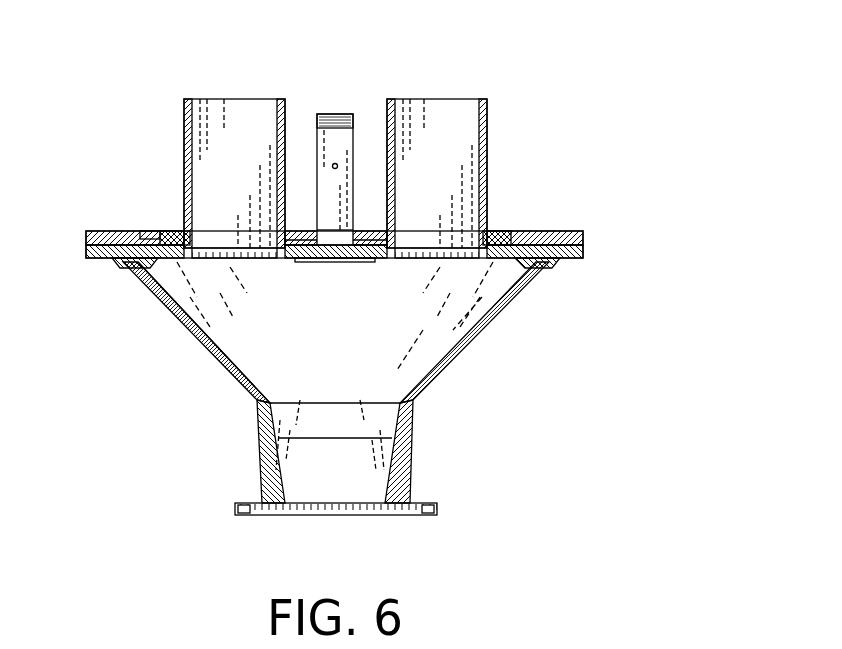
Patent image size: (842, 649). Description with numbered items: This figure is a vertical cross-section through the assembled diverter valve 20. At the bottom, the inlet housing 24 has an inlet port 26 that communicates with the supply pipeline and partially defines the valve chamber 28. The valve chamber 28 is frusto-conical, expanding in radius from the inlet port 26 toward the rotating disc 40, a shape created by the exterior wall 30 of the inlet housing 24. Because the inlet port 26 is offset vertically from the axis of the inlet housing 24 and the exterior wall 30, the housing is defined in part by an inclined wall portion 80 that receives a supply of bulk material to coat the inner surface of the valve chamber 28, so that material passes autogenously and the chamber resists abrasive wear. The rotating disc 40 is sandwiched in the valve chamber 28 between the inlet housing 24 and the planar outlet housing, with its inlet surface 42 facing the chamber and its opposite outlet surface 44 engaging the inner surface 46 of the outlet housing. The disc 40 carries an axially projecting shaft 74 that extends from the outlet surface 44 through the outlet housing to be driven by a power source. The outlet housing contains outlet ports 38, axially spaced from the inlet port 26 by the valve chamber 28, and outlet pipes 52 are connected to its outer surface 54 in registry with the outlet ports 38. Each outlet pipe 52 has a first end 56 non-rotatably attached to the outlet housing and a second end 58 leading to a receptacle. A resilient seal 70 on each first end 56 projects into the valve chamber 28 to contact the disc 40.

The diverter valve 20 is at (628, 257).
The inlet housing 24 is at (215, 358).
The inlet port 26 is at (407, 506).
The valve chamber 28 is at (386, 350).
The exterior wall 30 is at (182, 308).
The outlet ports 38 is at (180, 229).
The rotating disc 40 is at (350, 262).
The inlet surface 42 is at (497, 265).
The outlet surface 44 is at (520, 229).
The inner surface 46 is at (150, 231).
The outlet pipes 52 is at (287, 112).
The outer surface 54 is at (552, 231).
The first end 56 is at (272, 229).
The second end 58 is at (210, 99).
The resilient seal 70 is at (168, 285).
The shaft 74 is at (333, 112).
The inclined wall portion 80 is at (257, 402).